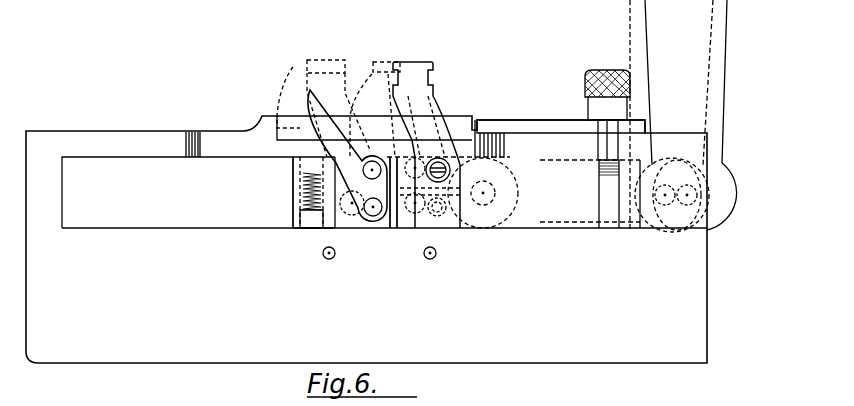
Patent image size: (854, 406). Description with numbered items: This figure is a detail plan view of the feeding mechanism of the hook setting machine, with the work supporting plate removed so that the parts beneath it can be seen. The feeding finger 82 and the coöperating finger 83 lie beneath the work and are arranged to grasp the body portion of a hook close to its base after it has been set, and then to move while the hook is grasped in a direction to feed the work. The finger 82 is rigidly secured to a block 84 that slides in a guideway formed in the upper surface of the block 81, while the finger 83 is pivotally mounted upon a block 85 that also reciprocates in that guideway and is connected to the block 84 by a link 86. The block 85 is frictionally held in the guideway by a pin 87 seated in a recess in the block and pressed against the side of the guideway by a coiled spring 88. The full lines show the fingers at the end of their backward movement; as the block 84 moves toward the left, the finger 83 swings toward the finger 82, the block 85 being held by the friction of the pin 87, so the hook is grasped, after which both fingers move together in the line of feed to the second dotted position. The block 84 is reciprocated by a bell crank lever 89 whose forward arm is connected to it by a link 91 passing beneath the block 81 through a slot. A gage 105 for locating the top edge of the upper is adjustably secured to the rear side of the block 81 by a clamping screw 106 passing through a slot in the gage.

The block 81 is at (113, 357).
The feeding finger 82 is at (426, 107).
The coöperating finger 83 is at (317, 122).
The block 84 is at (496, 221).
The block 85 is at (294, 218).
The link 86 is at (404, 222).
The pin 87 is at (312, 223).
The coiled spring 88 is at (300, 188).
The bell crank lever 89 is at (718, 61).
The link 91 is at (590, 216).
The gage 105 is at (513, 128).
The clamping screw 106 is at (586, 84).